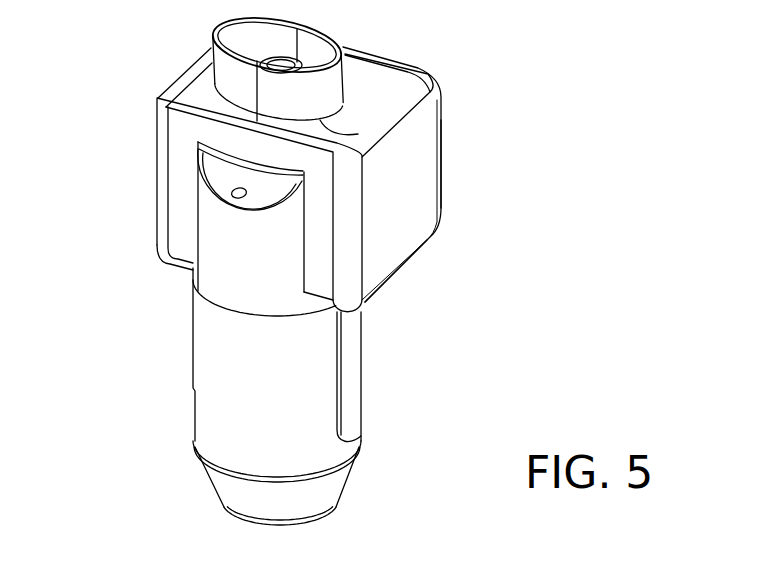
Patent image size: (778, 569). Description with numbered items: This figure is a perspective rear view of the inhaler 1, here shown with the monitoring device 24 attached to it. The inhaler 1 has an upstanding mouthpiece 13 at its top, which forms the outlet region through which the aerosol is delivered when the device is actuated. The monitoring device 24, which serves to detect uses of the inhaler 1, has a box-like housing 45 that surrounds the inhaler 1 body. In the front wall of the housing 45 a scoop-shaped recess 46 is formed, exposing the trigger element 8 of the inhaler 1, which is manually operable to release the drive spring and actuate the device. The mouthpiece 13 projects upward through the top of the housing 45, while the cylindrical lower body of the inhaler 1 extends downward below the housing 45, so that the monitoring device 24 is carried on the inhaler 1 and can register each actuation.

The inhaler 1 is at (192, 360).
The trigger element 8 is at (236, 200).
The mouthpiece 13 is at (322, 88).
The monitoring device 24 is at (397, 190).
The housing 45 is at (400, 238).
The recess 46 is at (344, 137).